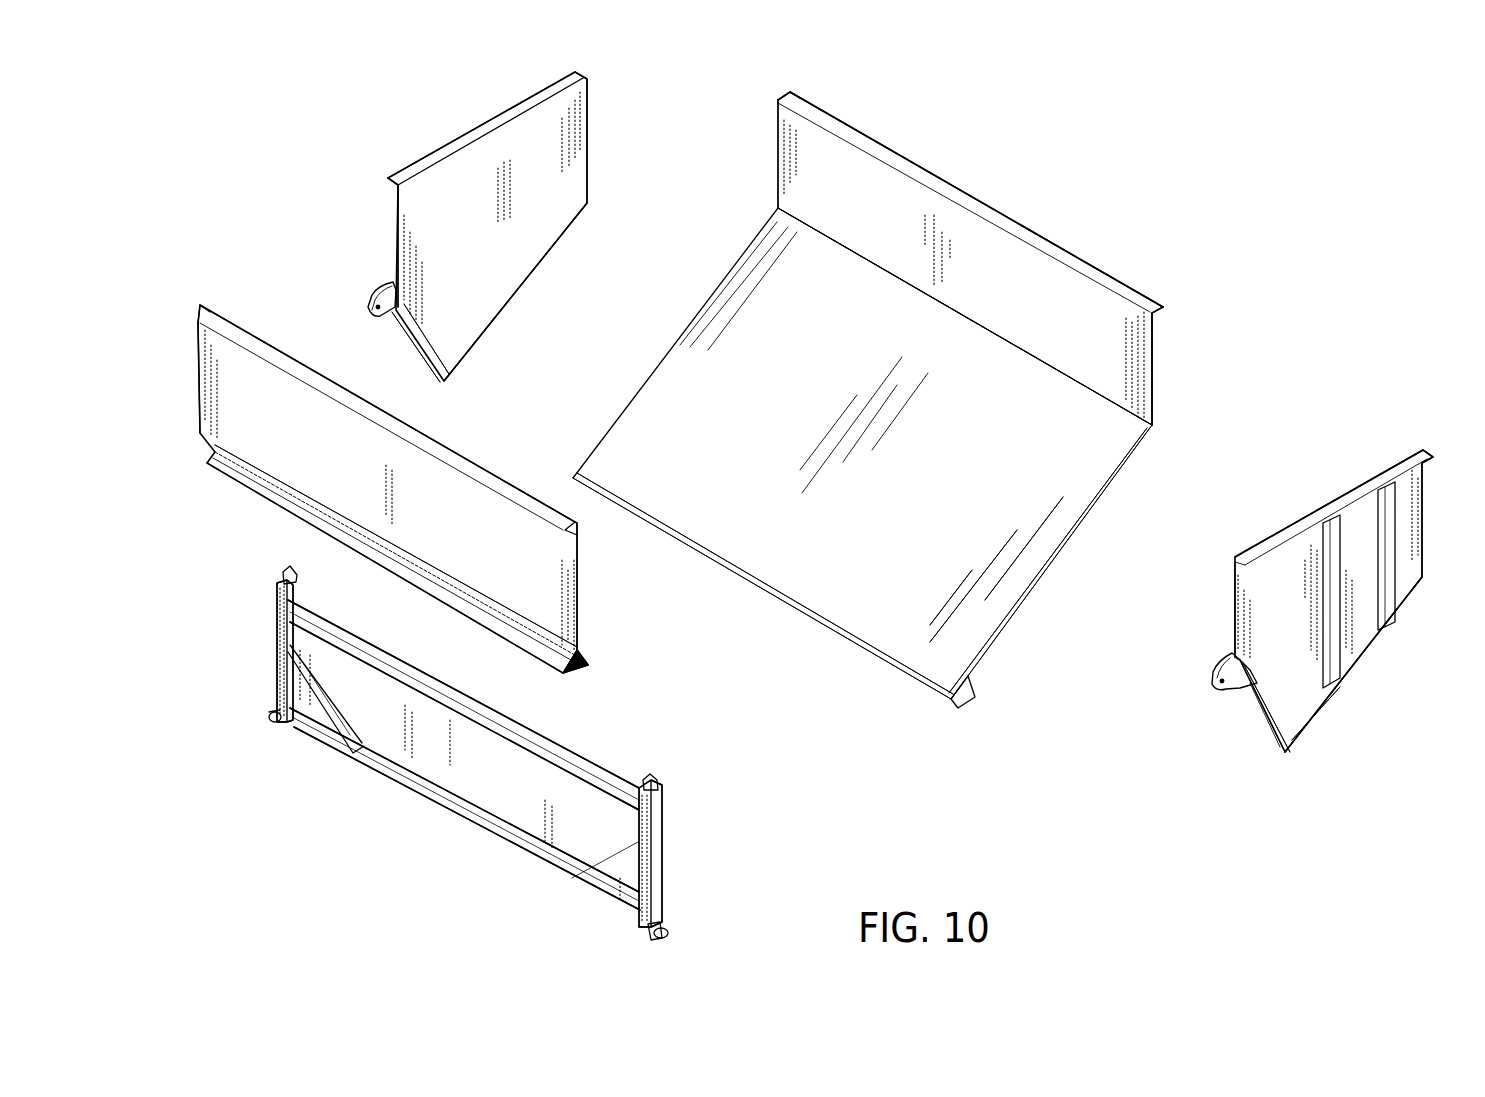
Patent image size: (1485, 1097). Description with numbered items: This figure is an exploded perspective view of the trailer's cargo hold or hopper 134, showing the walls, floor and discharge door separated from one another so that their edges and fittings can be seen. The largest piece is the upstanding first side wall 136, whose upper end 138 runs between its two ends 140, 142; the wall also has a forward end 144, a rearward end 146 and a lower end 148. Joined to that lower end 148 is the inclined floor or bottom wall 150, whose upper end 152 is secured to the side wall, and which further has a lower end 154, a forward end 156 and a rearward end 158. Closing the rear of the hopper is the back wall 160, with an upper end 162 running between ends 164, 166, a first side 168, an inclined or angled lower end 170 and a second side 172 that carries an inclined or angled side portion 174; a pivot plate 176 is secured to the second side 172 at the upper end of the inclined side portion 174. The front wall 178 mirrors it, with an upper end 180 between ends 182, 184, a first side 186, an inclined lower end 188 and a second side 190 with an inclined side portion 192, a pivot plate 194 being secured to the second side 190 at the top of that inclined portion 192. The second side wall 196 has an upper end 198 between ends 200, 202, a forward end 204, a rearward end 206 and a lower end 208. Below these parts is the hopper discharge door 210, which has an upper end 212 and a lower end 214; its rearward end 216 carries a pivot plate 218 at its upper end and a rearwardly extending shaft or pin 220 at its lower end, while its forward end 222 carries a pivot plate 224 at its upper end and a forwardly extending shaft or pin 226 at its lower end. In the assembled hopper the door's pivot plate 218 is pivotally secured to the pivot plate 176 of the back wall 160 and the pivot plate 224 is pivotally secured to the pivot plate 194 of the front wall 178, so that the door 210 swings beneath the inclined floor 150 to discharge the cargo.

The hopper 134 is at (1010, 178).
The first side wall 136 is at (1115, 348).
The upper end 138 is at (1058, 243).
The end 140 is at (778, 90).
The end 142 is at (1165, 307).
The forward end 144 is at (778, 120).
The rearward end 146 is at (1152, 388).
The lower end 148 is at (1072, 373).
The floor 150 is at (990, 545).
The upper end 152 is at (1072, 380).
The lower end 154 is at (858, 648).
The forward end 156 is at (540, 430).
The rearward end 158 is at (1062, 545).
The back wall 160 is at (1357, 473).
The upper end 162 is at (1293, 520).
The end 164 is at (1418, 448).
The end 166 is at (1235, 570).
The first side 168 is at (1425, 455).
The lower end 170 is at (1358, 648).
The second side 172 is at (1235, 650).
The inclined side portion 174 is at (1268, 697).
The pivot plate 176 is at (1222, 662).
The front wall 178 is at (503, 98).
The upper end 180 is at (443, 142).
The end 182 is at (583, 64).
The end 184 is at (386, 180).
The first side 186 is at (590, 158).
The lower end 188 is at (533, 272).
The second side 190 is at (397, 247).
The inclined side portion 192 is at (417, 336).
The pivot plate 194 is at (375, 290).
The second side wall 196 is at (275, 330).
The upper end 198 is at (407, 417).
The end 200 is at (183, 308).
The end 202 is at (578, 530).
The forward end 204 is at (197, 385).
The rearward end 206 is at (578, 605).
The lower end 208 is at (330, 537).
The hopper discharge door 210 is at (413, 806).
The upper end 212 is at (555, 740).
The lower end 214 is at (530, 857).
The rearward end 216 is at (663, 866).
The pivot plate 218 is at (658, 784).
The pin 220 is at (668, 925).
The forward end 222 is at (278, 690).
The pivot plate 224 is at (285, 578).
The pin 226 is at (270, 714).